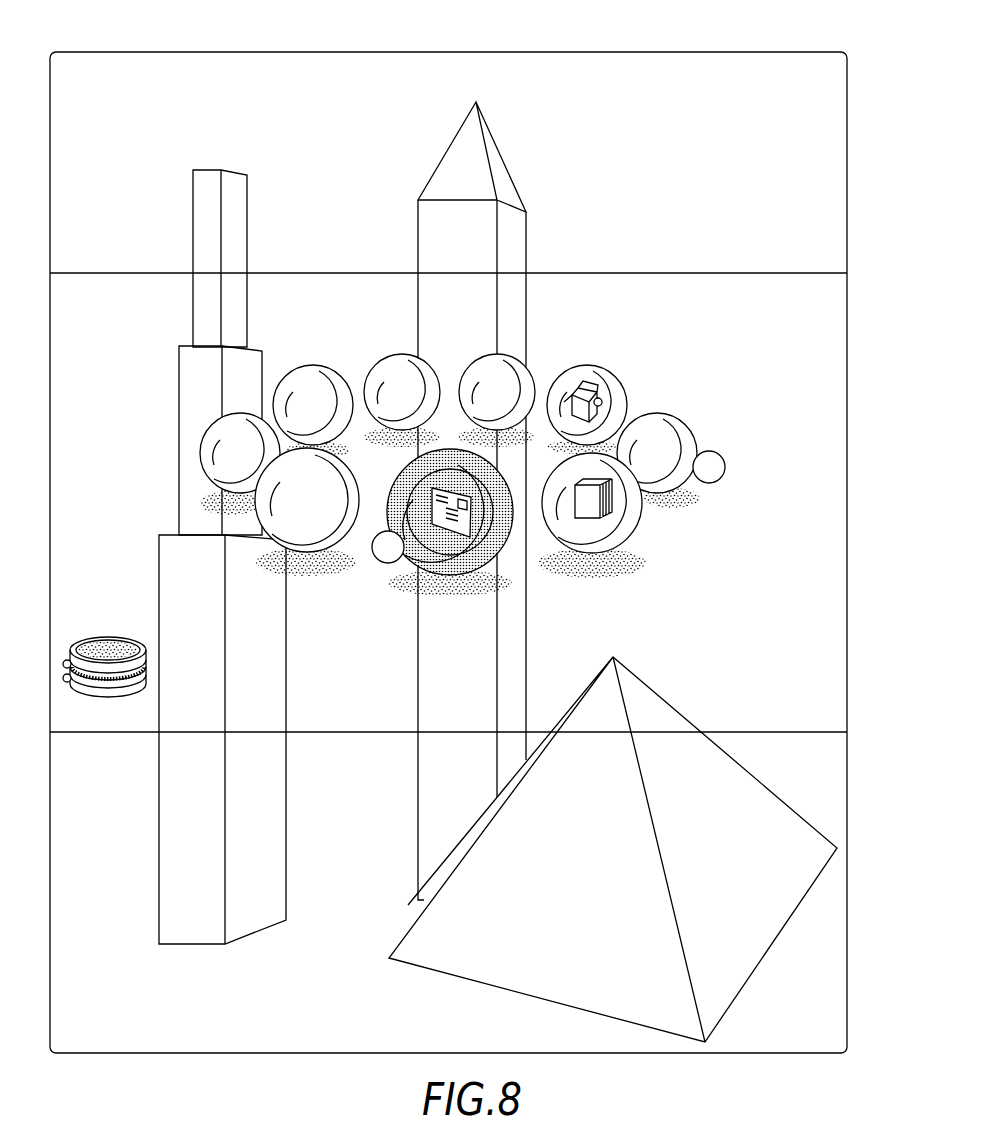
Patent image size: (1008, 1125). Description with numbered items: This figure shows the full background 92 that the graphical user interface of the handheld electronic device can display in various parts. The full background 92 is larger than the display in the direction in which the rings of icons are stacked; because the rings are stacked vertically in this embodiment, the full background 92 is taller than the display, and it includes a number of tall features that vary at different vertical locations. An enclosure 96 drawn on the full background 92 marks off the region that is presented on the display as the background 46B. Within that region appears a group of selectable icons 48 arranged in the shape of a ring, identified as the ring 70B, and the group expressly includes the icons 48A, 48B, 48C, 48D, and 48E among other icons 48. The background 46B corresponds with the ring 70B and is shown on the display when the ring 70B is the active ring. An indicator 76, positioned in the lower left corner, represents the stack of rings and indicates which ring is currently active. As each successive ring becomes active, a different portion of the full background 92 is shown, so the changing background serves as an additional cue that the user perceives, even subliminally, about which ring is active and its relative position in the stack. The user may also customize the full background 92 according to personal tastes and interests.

The full background 92 is at (579, 52).
The enclosure 96 is at (751, 272).
The background 46B is at (89, 487).
The ring 70B is at (462, 452).
The icons 48 is at (489, 358).
The icon 48A is at (505, 543).
The icon 48B is at (640, 524).
The icon 48C is at (665, 412).
The icon 48D is at (573, 366).
The icon 48E is at (386, 362).
The indicator 76 is at (110, 703).